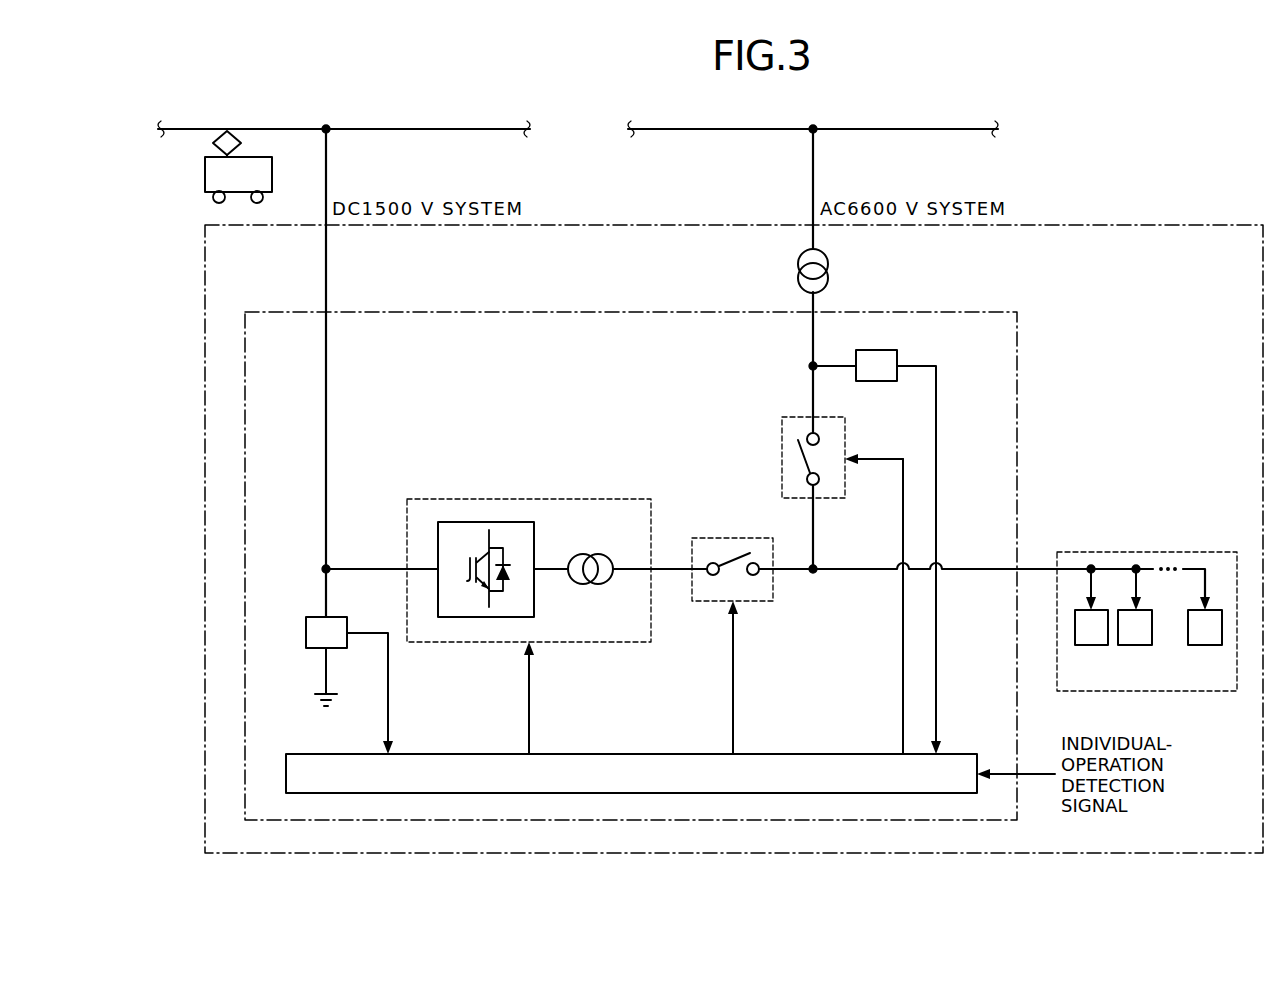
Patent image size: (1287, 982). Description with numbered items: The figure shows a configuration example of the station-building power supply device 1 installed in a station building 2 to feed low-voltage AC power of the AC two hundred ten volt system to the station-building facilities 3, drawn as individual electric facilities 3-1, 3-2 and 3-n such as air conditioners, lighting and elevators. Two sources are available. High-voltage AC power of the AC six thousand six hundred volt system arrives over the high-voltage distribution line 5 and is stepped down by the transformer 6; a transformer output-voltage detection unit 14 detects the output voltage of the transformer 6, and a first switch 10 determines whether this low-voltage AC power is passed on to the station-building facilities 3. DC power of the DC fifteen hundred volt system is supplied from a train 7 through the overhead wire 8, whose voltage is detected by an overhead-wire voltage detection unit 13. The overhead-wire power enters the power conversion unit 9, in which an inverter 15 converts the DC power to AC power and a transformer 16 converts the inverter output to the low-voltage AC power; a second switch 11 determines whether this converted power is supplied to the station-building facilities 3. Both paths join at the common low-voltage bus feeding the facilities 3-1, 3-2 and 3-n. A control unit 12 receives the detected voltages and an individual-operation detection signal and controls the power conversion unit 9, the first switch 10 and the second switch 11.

The station-building power supply device 1 is at (643, 314).
The station building 2 is at (1063, 231).
The station-building facilities 3 is at (1147, 606).
The electric facility 3-1 is at (1091, 645).
The electric facility 3-2 is at (1136, 645).
The electric facility 3-n is at (1205, 645).
The high-voltage distribution line 5 is at (866, 130).
The transformer 6 is at (829, 266).
The train 7 is at (205, 175).
The overhead wire 8 is at (398, 130).
The power conversion unit 9 is at (529, 555).
The first switch 10 is at (829, 416).
The second switch 11 is at (733, 537).
The control unit 12 is at (633, 754).
The overhead-wire voltage detection unit 13 is at (334, 617).
The transformer output-voltage detection unit 14 is at (880, 350).
The inverter 15 is at (535, 535).
The transformer 16 is at (597, 552).